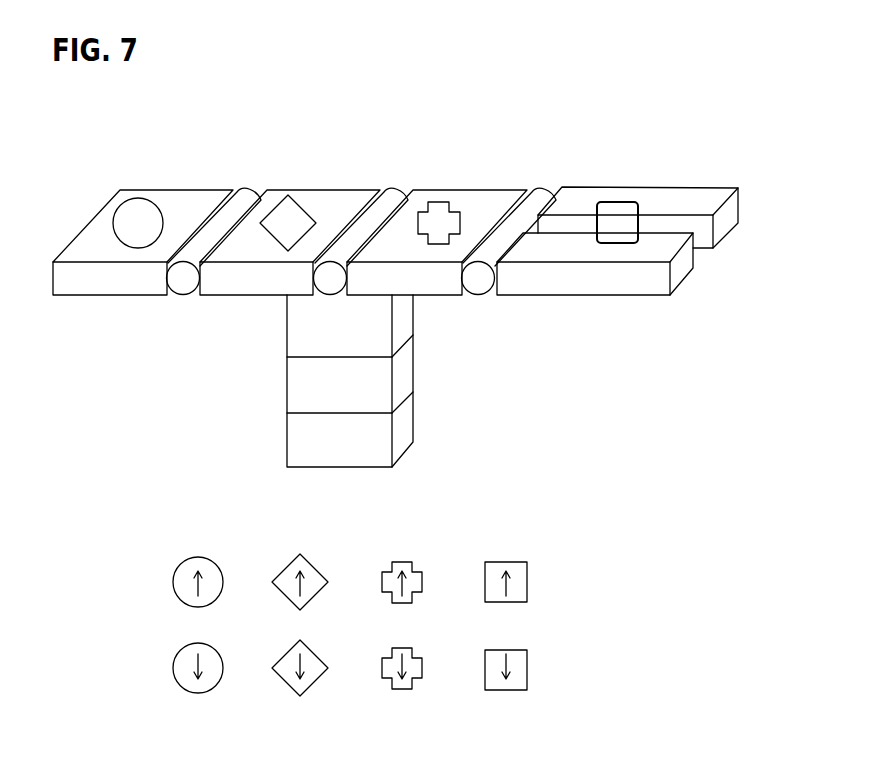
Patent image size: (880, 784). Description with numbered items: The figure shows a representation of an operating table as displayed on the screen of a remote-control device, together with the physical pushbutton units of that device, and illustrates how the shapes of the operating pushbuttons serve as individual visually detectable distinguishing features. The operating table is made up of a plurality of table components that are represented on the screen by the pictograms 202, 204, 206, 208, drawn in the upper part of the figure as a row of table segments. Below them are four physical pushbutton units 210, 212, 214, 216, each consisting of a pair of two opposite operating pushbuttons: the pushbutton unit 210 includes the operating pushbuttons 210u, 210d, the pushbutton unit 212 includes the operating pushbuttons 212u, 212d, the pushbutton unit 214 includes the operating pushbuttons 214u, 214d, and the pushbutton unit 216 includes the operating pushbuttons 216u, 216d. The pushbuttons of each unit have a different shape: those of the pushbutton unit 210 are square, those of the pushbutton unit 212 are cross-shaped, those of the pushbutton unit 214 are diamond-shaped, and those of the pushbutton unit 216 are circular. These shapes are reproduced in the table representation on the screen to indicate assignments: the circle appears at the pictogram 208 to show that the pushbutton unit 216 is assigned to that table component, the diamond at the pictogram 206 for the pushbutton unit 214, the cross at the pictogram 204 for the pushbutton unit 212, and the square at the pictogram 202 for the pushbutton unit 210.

The pictogram 202 is at (683, 267).
The pictogram 204 is at (490, 197).
The pictogram 206 is at (340, 197).
The pictogram 208 is at (178, 197).
The pushbutton unit 210 is at (542, 583).
The operating pushbutton 210u is at (527, 584).
The operating pushbutton 210d is at (527, 672).
The pushbutton unit 212 is at (405, 613).
The operating pushbutton 212u is at (415, 594).
The operating pushbutton 212d is at (413, 682).
The pushbutton unit 214 is at (308, 613).
The operating pushbutton 214u is at (307, 603).
The operating pushbutton 214d is at (307, 689).
The pushbutton unit 216 is at (150, 580).
The operating pushbutton 216u is at (174, 583).
The operating pushbutton 216d is at (174, 670).